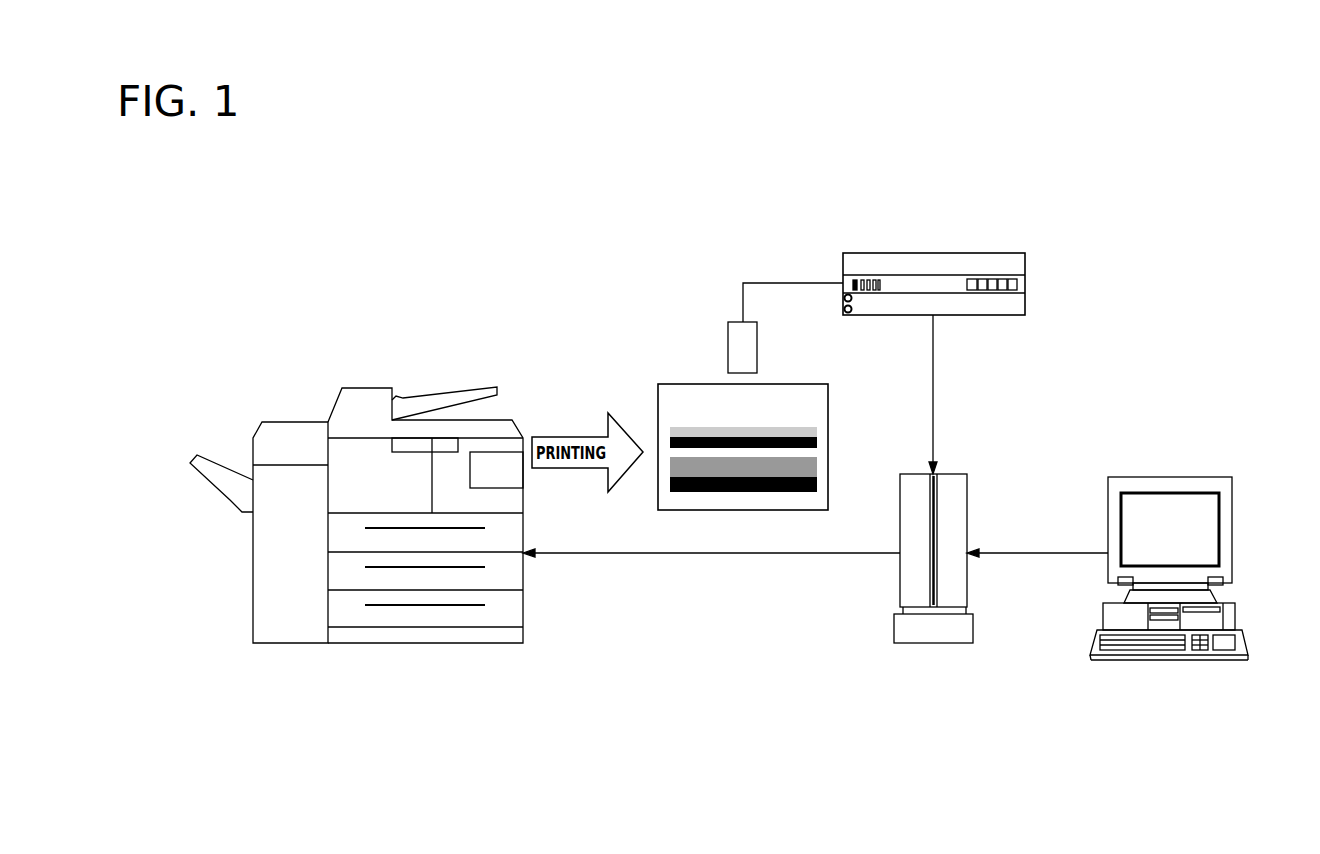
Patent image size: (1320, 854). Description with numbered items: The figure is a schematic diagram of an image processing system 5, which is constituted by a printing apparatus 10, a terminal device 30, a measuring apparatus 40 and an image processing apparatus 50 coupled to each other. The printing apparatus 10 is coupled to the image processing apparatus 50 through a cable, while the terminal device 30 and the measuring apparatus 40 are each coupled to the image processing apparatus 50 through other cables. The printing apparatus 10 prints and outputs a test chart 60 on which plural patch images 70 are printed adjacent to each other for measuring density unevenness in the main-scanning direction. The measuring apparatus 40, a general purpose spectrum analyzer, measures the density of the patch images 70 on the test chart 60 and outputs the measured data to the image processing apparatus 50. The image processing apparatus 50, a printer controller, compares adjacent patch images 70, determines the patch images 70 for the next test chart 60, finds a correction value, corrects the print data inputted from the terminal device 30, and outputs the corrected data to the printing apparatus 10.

The image processing system 5 is at (273, 233).
The printing apparatus 10 is at (432, 392).
The terminal device 30 is at (1168, 663).
The measuring apparatus 40 is at (923, 253).
The image processing apparatus 50 is at (932, 646).
The test chart 60 is at (687, 383).
The patch images 70 is at (817, 443).